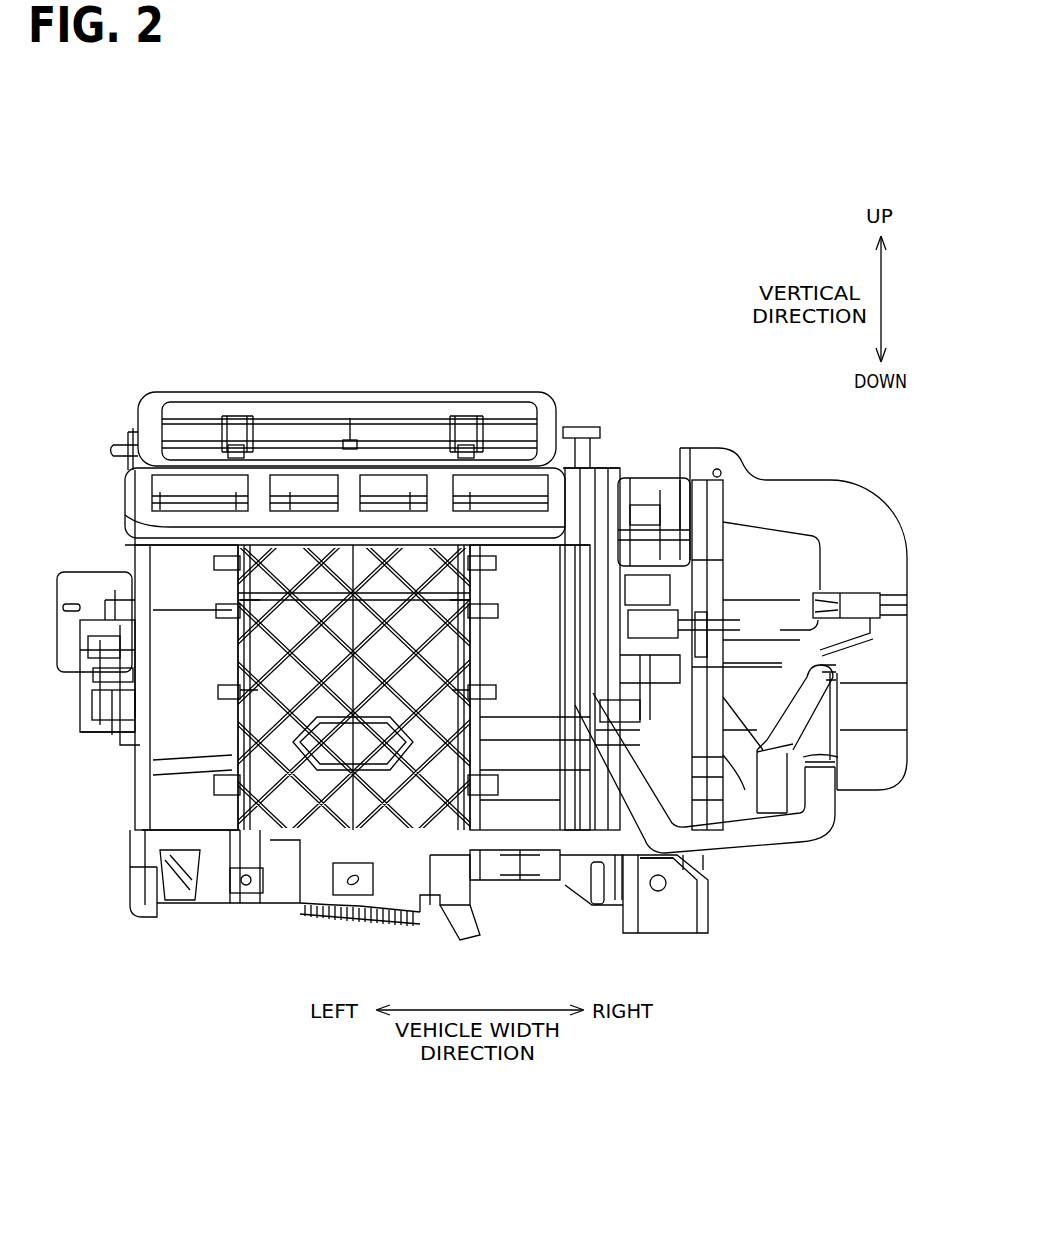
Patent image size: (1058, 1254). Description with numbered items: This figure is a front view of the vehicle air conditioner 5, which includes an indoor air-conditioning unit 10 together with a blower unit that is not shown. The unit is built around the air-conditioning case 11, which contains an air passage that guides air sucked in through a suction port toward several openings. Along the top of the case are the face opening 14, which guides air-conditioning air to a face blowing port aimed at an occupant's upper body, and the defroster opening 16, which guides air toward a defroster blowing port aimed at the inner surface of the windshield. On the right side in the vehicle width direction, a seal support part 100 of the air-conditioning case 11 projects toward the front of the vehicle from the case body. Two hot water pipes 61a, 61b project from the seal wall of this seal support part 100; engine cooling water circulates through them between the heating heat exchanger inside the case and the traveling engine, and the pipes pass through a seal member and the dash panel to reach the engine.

The vehicle air conditioner 5 is at (246, 1006).
The indoor air-conditioning unit 10 is at (158, 925).
The air-conditioning case 11 is at (138, 777).
The face opening 14 is at (217, 497).
The defroster opening 16 is at (408, 414).
The seal support part 100 is at (801, 478).
The hot water pipe 61a is at (822, 698).
The hot water pipe 61b is at (783, 835).